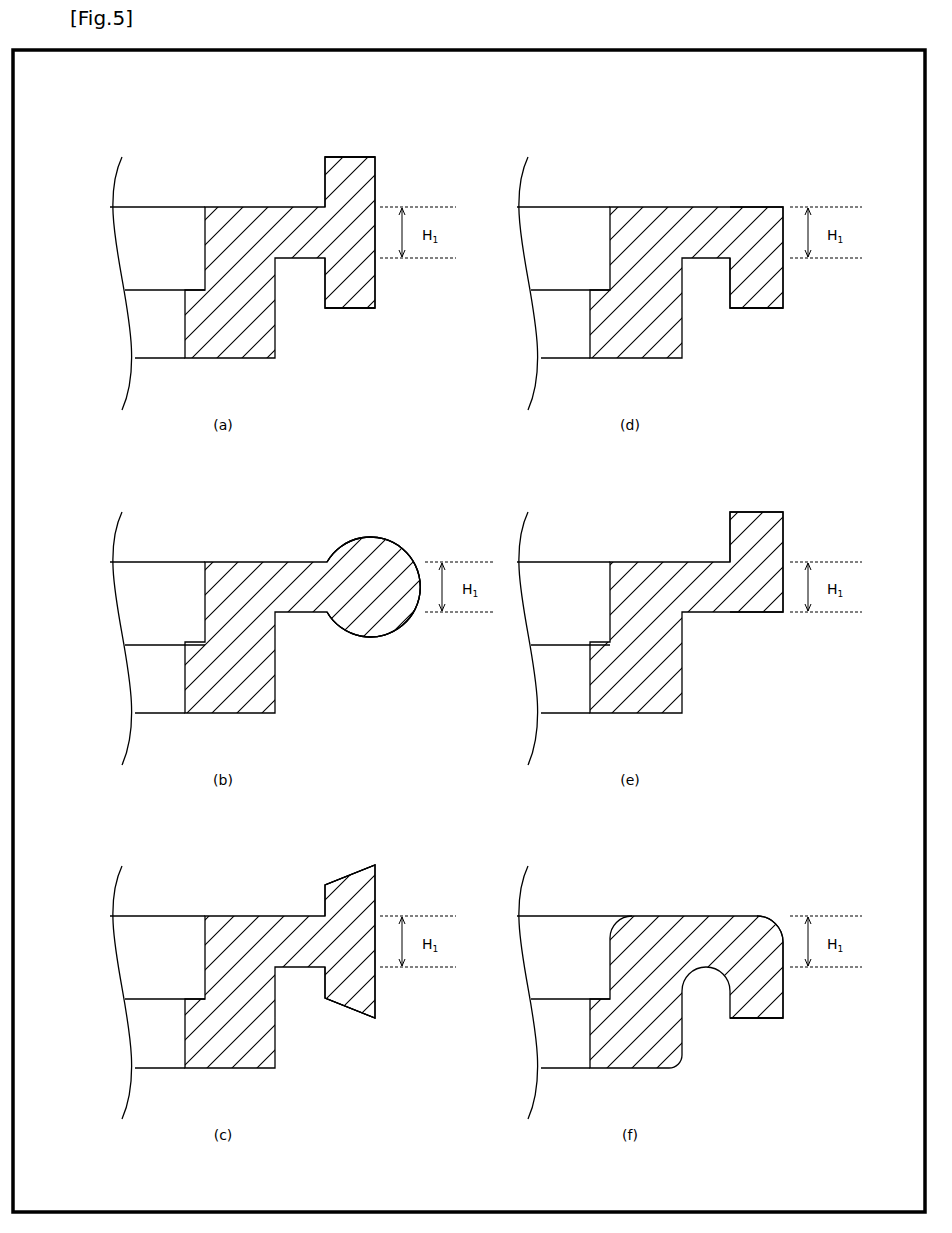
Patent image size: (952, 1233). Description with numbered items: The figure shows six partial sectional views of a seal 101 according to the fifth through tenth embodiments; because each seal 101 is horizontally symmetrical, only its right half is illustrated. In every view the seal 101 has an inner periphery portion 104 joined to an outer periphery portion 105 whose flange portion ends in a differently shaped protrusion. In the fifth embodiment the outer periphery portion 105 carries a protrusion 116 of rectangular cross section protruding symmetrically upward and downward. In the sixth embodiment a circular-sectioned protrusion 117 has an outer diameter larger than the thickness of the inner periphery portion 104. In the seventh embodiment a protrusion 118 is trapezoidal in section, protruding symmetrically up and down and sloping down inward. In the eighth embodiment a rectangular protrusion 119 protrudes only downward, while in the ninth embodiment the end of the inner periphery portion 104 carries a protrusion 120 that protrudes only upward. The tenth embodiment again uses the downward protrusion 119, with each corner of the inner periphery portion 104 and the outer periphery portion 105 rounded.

The seal 101 is at (491, 617).
The inner periphery portion 104 is at (484, 594).
The outer periphery portion 105 is at (567, 547).
The protrusion 116 is at (402, 232).
The circular-sectioned protrusion 117 is at (386, 622).
The protrusion 118 is at (402, 941).
The protrusion 119 is at (782, 696).
The protrusion 120 is at (751, 512).